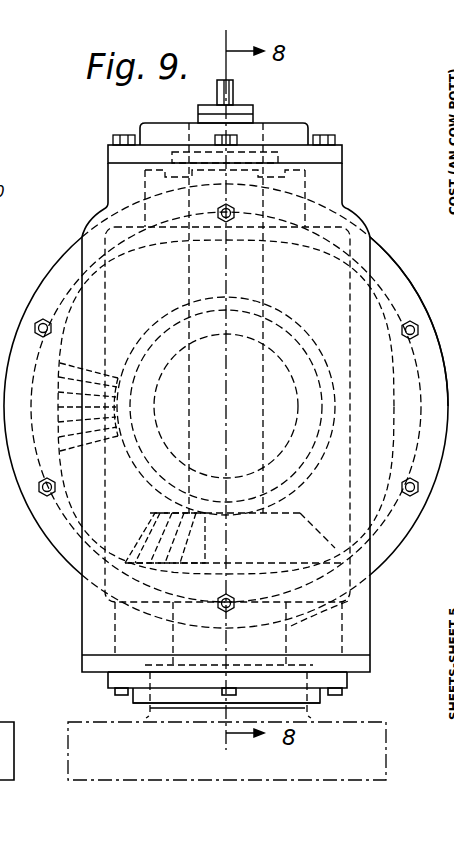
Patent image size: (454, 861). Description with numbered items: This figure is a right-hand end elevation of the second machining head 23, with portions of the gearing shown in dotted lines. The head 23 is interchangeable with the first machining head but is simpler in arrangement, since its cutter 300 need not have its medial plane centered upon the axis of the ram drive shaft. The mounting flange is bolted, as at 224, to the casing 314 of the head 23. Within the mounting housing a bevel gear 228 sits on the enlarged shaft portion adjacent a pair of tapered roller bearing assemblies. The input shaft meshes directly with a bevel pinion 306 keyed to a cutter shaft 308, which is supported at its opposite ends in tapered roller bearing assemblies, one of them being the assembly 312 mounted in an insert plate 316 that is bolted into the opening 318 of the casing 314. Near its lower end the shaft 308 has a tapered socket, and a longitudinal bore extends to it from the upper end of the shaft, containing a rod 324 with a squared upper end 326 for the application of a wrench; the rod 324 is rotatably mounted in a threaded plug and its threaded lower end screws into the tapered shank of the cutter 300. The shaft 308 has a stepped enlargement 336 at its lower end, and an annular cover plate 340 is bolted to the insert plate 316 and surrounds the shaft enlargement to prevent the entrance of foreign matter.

The second machining head 23 is at (358, 206).
The bolts 224 is at (38, 320).
The bevel gear 228 is at (306, 330).
The cutter 300 is at (386, 752).
The bevel pinion 306 is at (313, 528).
The cutter shaft 308 is at (264, 376).
The tapered roller bearing assembly 312 is at (0, 610).
The casing 314 is at (372, 262).
The insert plate 316 is at (358, 662).
The opening 318 is at (0, 631).
The rod 324 is at (252, 106).
The squared upper end 326 is at (233, 89).
The stepped enlargement 336 is at (304, 620).
The annular cover plate 340 is at (335, 680).